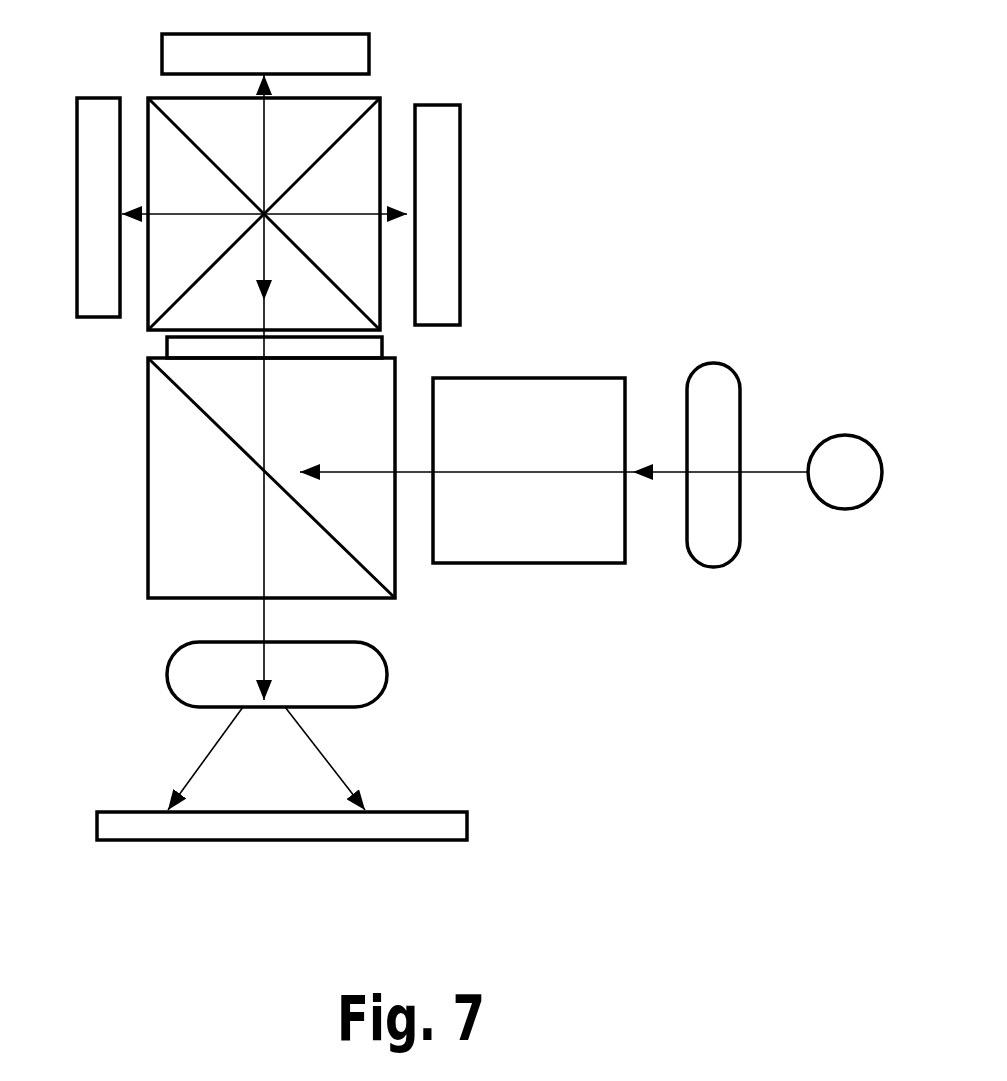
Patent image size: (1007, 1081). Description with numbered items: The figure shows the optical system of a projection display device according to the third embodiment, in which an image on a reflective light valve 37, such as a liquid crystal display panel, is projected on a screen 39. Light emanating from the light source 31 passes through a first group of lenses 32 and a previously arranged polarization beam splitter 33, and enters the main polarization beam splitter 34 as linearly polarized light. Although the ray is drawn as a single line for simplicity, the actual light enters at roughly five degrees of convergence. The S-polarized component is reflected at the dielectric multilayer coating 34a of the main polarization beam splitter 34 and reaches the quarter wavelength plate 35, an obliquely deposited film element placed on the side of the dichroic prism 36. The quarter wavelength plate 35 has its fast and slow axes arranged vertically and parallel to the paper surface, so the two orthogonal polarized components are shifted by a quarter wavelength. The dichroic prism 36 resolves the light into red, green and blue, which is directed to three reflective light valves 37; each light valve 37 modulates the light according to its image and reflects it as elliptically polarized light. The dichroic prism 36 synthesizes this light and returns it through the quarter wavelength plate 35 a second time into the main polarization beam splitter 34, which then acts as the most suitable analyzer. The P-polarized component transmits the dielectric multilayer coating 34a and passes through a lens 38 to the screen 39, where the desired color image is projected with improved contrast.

The light source 31 is at (857, 436).
The first group of lenses 32 is at (720, 363).
The previously arranged polarization beam splitter 33 is at (534, 378).
The main polarization beam splitter 34 is at (147, 458).
The dielectric multilayer coating 34a is at (374, 578).
The quarter wavelength plate 35 is at (167, 352).
The dichroic prism 36 is at (381, 108).
The reflective light valve 37 is at (162, 56).
The projection lens 38 is at (387, 676).
The screen 39 is at (467, 822).